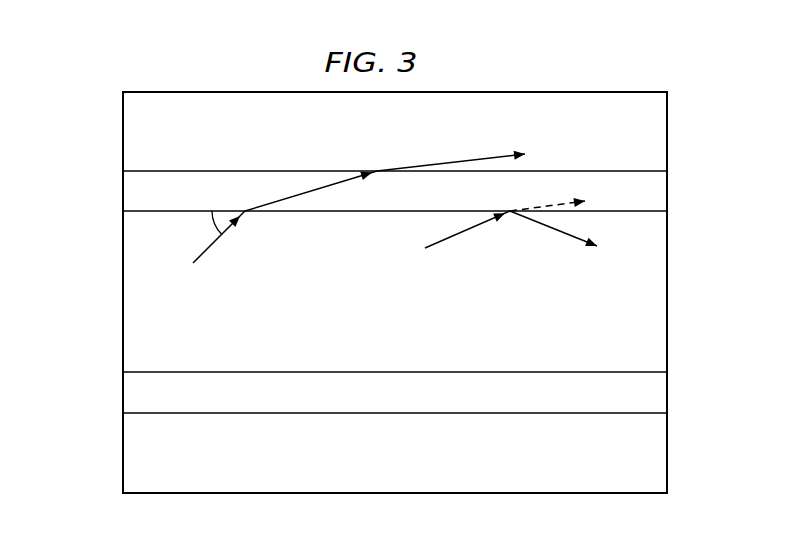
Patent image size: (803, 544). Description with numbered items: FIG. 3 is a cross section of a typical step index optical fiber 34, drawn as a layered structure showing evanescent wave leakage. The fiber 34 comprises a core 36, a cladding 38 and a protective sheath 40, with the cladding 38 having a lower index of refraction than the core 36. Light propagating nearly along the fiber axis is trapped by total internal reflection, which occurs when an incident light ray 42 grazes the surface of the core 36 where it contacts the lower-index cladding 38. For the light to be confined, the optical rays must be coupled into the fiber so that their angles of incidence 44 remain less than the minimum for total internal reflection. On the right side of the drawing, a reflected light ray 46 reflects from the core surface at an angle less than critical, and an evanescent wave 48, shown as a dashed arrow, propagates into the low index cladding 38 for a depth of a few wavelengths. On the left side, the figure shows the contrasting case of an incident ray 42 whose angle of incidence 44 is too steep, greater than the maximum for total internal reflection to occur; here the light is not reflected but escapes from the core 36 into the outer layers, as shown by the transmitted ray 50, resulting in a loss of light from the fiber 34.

The step index optical fiber 34 is at (672, 346).
The core 36 is at (136, 297).
The cladding 38 is at (136, 395).
The protective sheath 40 is at (140, 460).
The incident light ray 42 is at (198, 256).
The angle of incidence 44 is at (216, 226).
The reflected light ray 46 is at (570, 227).
The evanescent wave 48 is at (555, 205).
The transmitted ray 50 is at (468, 158).